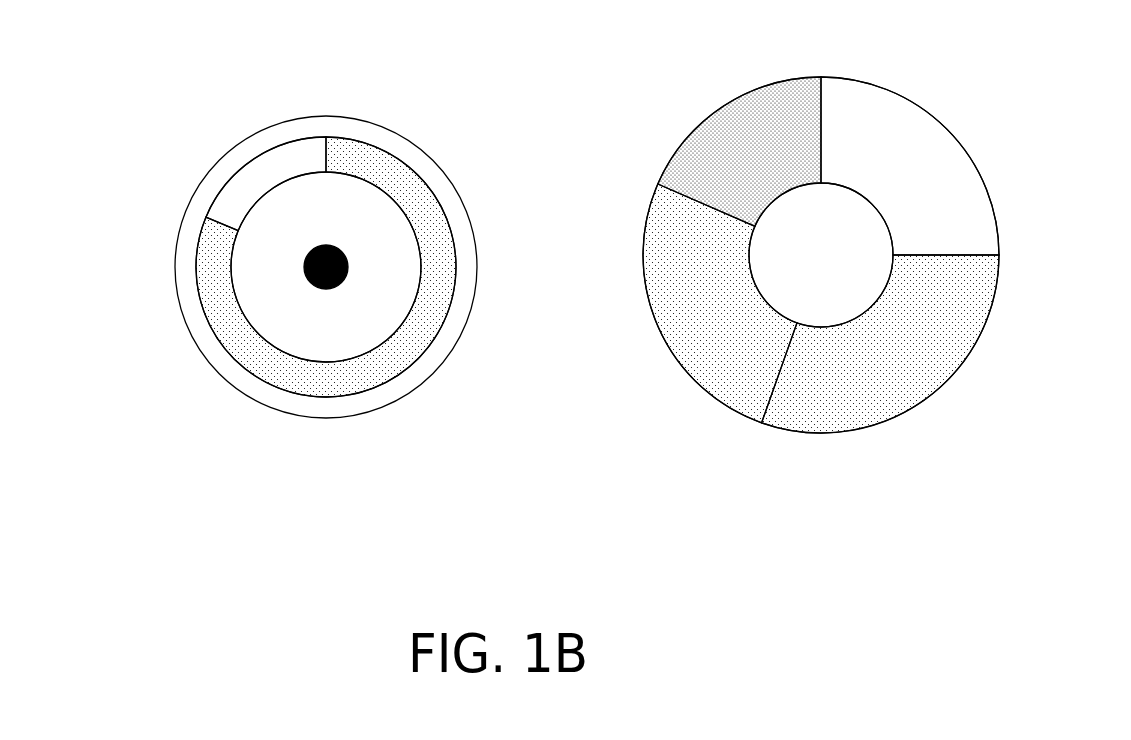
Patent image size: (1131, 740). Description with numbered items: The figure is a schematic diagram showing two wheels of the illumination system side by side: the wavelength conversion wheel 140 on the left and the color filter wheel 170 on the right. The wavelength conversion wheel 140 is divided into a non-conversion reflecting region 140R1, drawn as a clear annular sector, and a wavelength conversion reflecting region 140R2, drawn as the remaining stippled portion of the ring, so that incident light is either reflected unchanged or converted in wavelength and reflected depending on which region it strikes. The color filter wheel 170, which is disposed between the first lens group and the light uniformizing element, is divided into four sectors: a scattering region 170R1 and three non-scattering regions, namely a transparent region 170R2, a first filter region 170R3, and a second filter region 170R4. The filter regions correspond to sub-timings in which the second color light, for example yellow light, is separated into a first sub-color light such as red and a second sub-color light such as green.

The wavelength conversion wheel 140 is at (279, 284).
The non-conversion reflecting region 140R1 is at (260, 167).
The wavelength conversion reflecting region 140R2 is at (230, 332).
The color filter wheel 170 is at (822, 276).
The scattering region 170R1 is at (735, 127).
The transparent region 170R2 is at (943, 163).
The first filter region 170R3 is at (700, 327).
The second filter region 170R4 is at (910, 368).